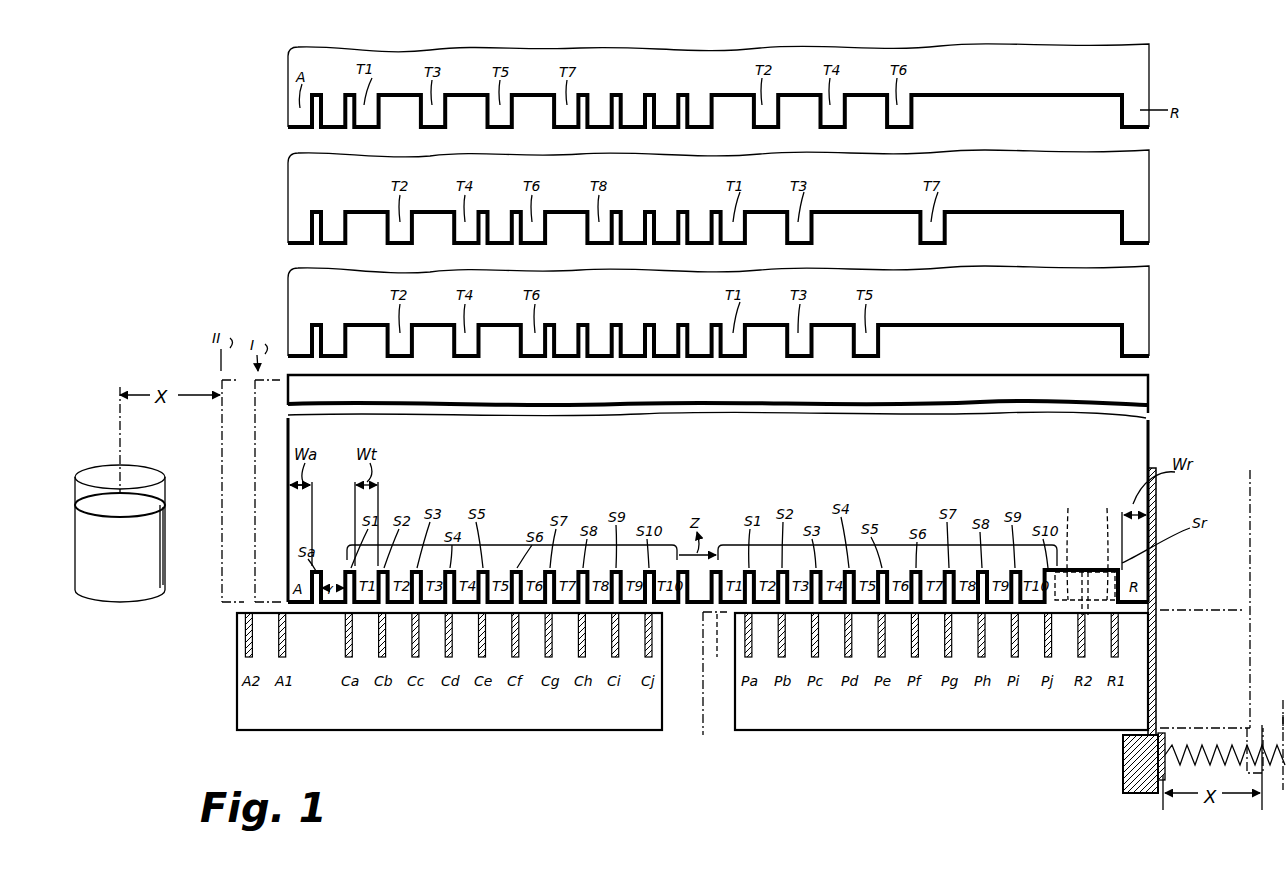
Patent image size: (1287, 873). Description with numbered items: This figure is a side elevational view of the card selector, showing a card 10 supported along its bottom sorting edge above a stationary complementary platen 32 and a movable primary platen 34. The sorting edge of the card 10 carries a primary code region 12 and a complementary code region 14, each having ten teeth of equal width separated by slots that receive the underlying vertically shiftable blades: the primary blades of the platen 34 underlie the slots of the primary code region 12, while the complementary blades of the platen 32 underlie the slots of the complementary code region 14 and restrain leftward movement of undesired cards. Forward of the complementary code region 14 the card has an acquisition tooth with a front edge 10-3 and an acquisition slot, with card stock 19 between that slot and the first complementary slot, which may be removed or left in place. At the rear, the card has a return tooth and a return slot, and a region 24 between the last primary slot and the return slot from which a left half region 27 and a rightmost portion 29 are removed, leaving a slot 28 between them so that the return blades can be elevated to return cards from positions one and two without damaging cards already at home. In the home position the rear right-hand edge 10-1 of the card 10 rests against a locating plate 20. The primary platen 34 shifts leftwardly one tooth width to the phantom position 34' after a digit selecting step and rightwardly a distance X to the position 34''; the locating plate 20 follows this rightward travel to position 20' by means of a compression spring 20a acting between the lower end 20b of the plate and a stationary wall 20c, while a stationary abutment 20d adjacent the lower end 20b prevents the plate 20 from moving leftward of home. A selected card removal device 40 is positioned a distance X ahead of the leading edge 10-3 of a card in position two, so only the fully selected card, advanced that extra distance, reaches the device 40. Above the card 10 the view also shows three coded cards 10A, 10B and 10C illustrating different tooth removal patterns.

The card 10 is at (1165, 403).
The rear right-hand edge of card 10-1 is at (1152, 441).
The front edge of acquisition tooth 10-3 is at (280, 407).
The code strip (135 code) 10A is at (1130, 302).
The code strip (137 code) 10B is at (1130, 186).
The code strip (246 code) 10C is at (1130, 68).
The primary code region 12 is at (882, 545).
The complementary code region 14 is at (505, 545).
The card stock 19 is at (336, 578).
The locating plate 20 is at (1182, 601).
The displaced position of locating plate 20' is at (1245, 630).
The compression spring 20a is at (1185, 748).
The lower end of plate 20b is at (1166, 738).
The stationary wall 20c is at (1283, 722).
The stationary abutment 20d is at (1138, 766).
The region between slot S10 and slot Sr 24 is at (1087, 541).
The left half region (removed tooth) 27 is at (1063, 545).
The slot 28 is at (1140, 632).
The rightmost portion (removed tooth) 29 is at (1110, 545).
The complementary platen 32 is at (508, 734).
The primary platen 34 is at (941, 696).
The leftmost position of primary platen 34' is at (695, 700).
The rightmost position of primary platen 34'' is at (1205, 656).
The selected card removal device 40 is at (140, 608).